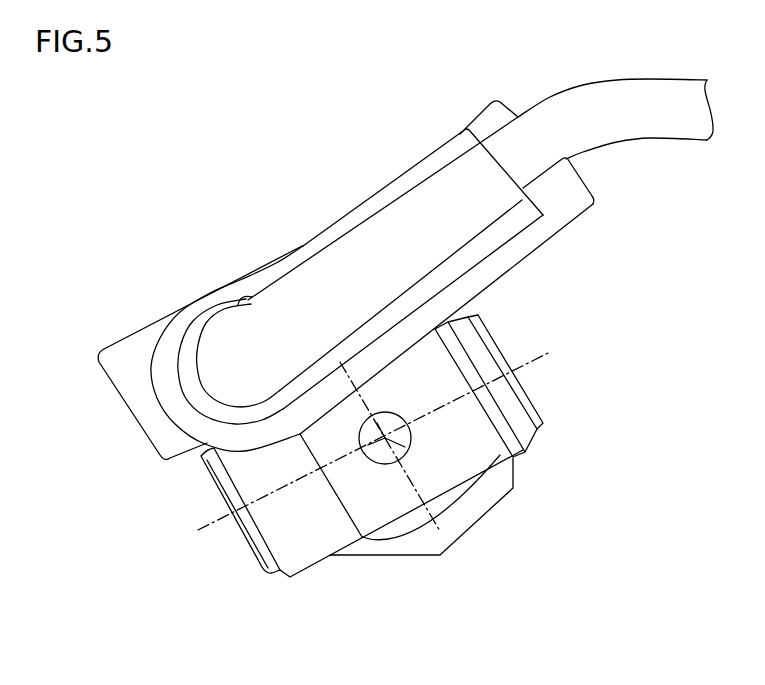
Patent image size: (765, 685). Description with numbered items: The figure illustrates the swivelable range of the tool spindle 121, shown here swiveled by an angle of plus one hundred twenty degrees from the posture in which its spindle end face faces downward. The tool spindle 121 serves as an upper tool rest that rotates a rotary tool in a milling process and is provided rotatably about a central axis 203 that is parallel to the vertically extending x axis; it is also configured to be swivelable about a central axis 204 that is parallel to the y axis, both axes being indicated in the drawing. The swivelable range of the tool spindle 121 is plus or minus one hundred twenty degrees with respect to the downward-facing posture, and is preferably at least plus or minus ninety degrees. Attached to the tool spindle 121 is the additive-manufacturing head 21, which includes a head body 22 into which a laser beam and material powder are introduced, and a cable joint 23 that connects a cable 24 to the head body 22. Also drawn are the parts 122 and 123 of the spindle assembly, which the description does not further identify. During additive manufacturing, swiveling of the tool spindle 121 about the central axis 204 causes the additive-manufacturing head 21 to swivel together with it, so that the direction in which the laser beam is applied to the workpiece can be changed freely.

The additive-manufacturing head 21 is at (120, 325).
The head body 22 is at (125, 373).
The cable joint 23 is at (402, 208).
The cable 24 is at (622, 95).
The tool spindle 121 is at (332, 563).
The holder block 122 is at (387, 500).
The clamp arm 123 is at (545, 410).
The central axis 203 is at (533, 365).
The central axis 204 is at (410, 446).